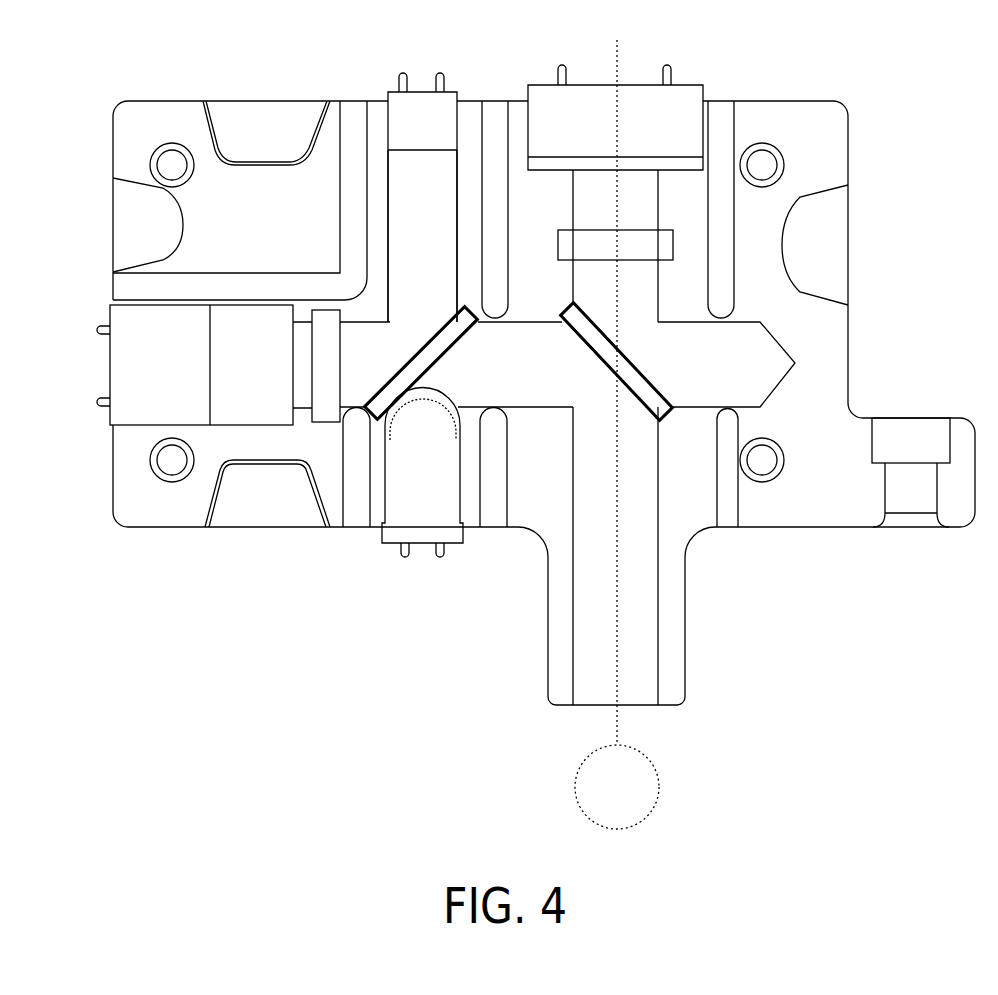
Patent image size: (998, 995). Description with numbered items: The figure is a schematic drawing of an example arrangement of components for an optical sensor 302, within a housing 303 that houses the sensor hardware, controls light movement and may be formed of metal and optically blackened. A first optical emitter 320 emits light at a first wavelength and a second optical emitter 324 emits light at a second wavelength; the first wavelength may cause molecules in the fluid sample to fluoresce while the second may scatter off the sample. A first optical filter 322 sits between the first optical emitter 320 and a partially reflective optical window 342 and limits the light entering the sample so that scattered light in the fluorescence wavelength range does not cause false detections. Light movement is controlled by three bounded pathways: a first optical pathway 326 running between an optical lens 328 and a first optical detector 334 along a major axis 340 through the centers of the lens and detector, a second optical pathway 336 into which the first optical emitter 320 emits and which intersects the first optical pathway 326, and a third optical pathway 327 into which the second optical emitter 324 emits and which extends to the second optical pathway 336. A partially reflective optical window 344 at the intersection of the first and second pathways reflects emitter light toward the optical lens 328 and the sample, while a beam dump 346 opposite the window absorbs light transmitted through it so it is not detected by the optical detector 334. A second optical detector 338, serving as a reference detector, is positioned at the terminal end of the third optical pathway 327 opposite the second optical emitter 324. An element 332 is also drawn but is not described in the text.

The optical sensor 302 is at (200, 95).
The housing 303 is at (276, 219).
The first optical emitter 320 is at (176, 376).
The first optical filter 322 is at (327, 372).
The second optical emitter 324 is at (441, 494).
The first optical pathway 326 is at (635, 547).
The third optical pathway 327 is at (441, 224).
The optical lens 328 is at (634, 797).
The filter 332 is at (587, 246).
The first optical detector 334 is at (676, 134).
The second optical pathway 336 is at (526, 376).
The second optical detector 338 is at (441, 134).
The major axis 340 is at (617, 715).
The partially reflective optical window 342 is at (418, 360).
The partially reflective optical window 344 is at (580, 320).
The beam dump 346 is at (751, 369).